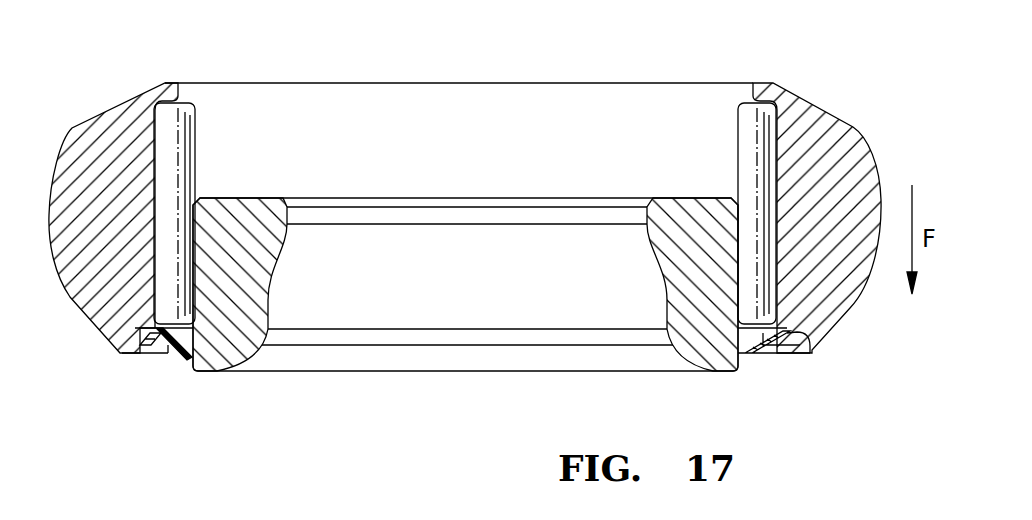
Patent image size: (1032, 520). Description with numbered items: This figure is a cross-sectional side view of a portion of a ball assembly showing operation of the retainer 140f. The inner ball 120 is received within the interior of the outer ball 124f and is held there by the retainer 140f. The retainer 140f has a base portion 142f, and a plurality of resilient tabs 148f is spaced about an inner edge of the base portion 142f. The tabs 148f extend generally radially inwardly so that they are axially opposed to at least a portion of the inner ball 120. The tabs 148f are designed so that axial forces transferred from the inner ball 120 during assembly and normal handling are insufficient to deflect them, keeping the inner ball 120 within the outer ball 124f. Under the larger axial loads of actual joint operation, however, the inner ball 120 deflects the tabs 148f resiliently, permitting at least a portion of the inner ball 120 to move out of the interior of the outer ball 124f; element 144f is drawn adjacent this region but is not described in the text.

The inner ball 120 is at (667, 197).
The outer ball 124f is at (848, 310).
The retainer 140f is at (173, 357).
The base portion 142f is at (157, 355).
The flange 144f is at (808, 353).
The resilient tabs 148f is at (182, 358).